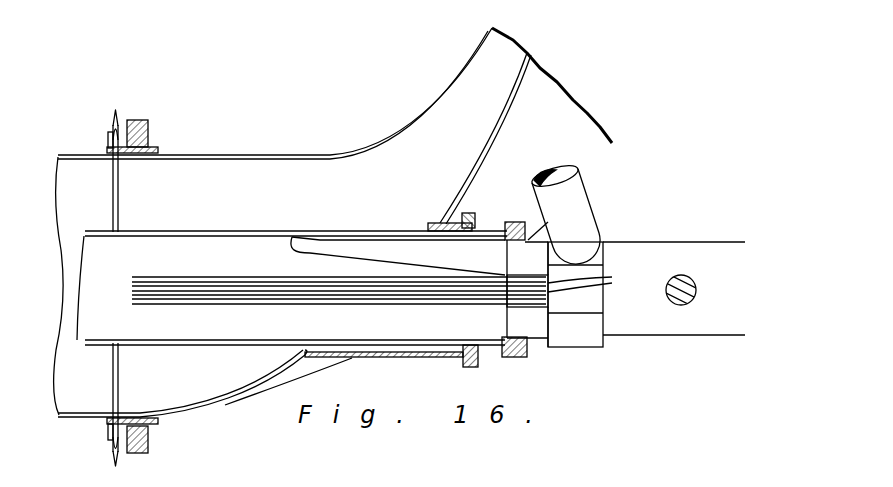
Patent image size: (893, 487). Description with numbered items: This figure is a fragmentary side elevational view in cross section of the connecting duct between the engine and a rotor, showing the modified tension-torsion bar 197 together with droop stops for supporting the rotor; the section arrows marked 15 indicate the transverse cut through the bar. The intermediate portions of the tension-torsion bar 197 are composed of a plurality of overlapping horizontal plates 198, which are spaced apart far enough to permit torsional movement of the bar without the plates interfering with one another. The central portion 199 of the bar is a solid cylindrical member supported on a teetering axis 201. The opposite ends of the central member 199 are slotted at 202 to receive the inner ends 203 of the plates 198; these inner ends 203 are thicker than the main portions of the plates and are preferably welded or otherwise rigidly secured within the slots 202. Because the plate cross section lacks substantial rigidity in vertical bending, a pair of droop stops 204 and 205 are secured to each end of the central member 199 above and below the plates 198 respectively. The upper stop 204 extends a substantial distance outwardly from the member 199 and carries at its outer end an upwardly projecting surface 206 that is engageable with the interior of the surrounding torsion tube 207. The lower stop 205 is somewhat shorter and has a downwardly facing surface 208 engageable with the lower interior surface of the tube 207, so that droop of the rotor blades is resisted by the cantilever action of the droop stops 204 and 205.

The section line 15- 15 is at (235, 253).
The tension-torsion bar 197 is at (537, 340).
The overlapping horizontal plates 198 is at (172, 282).
The central portion 199 is at (538, 245).
The teetering axis 201 is at (695, 279).
The slots 202 is at (518, 276).
The inner ends of plates 203 is at (597, 282).
The droop stop 204 is at (381, 243).
The droop stop 205 is at (503, 310).
The upwardly projecting surface 206 is at (298, 238).
The torsion tube 207 is at (261, 230).
The downwardly facing surface 208 is at (489, 348).